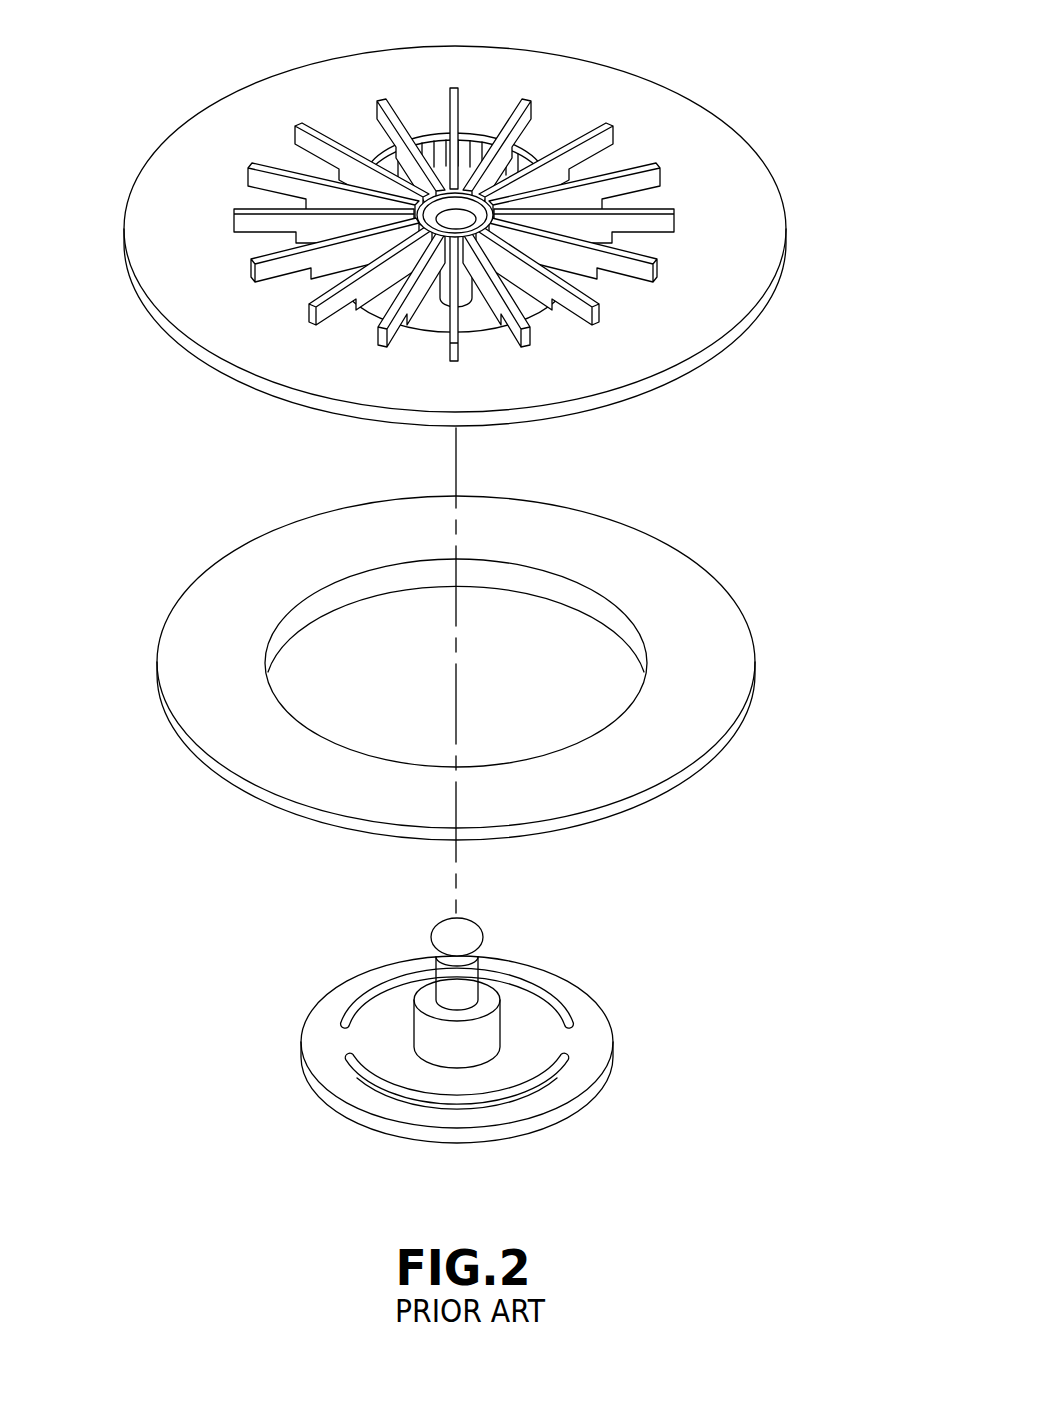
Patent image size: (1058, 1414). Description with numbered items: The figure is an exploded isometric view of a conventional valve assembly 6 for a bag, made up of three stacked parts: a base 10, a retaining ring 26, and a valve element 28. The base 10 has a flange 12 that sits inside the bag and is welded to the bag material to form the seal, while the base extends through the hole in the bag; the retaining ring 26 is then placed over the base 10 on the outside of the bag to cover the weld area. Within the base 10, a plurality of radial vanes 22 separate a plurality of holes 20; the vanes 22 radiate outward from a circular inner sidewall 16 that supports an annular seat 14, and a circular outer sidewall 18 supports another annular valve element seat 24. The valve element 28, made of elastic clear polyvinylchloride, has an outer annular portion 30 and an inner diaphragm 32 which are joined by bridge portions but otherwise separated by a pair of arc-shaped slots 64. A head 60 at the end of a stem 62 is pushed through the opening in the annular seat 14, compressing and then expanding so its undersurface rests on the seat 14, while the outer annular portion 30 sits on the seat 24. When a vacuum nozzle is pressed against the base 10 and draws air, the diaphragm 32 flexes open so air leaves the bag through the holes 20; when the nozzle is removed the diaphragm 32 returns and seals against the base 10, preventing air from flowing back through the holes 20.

The valve assembly 6 is at (100, 40).
The base 10 is at (810, 129).
The flange 12 is at (672, 113).
The annular seat 14 is at (432, 167).
The circular inner sidewall 16 is at (368, 279).
The circular outer sidewall 18 is at (482, 133).
The holes 20 is at (465, 283).
The radial vanes 22 is at (544, 283).
The annular valve element seat 24 is at (473, 320).
The retaining ring 26 is at (785, 611).
The valve element 28 is at (628, 996).
The outer annular portion 30 is at (517, 1117).
The inner diaphragm 32 is at (528, 1057).
The head 60 is at (470, 930).
The stem 62 is at (547, 998).
The arc-shaped slots 64 is at (362, 998).